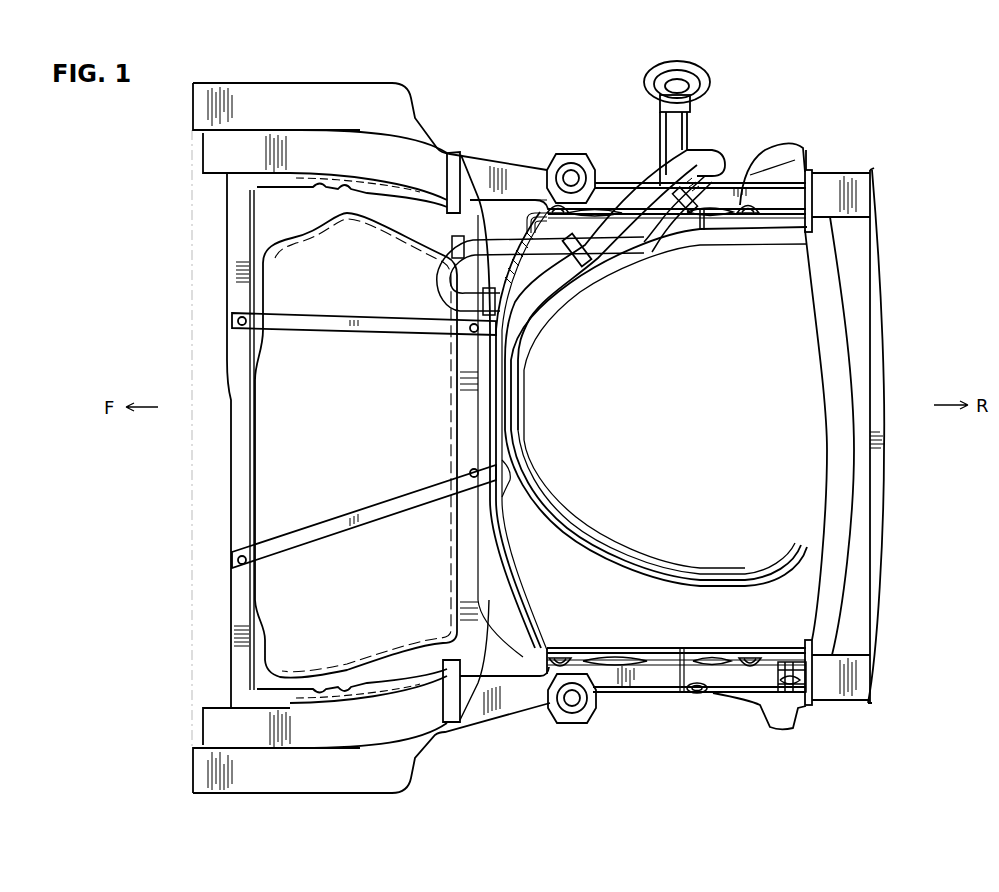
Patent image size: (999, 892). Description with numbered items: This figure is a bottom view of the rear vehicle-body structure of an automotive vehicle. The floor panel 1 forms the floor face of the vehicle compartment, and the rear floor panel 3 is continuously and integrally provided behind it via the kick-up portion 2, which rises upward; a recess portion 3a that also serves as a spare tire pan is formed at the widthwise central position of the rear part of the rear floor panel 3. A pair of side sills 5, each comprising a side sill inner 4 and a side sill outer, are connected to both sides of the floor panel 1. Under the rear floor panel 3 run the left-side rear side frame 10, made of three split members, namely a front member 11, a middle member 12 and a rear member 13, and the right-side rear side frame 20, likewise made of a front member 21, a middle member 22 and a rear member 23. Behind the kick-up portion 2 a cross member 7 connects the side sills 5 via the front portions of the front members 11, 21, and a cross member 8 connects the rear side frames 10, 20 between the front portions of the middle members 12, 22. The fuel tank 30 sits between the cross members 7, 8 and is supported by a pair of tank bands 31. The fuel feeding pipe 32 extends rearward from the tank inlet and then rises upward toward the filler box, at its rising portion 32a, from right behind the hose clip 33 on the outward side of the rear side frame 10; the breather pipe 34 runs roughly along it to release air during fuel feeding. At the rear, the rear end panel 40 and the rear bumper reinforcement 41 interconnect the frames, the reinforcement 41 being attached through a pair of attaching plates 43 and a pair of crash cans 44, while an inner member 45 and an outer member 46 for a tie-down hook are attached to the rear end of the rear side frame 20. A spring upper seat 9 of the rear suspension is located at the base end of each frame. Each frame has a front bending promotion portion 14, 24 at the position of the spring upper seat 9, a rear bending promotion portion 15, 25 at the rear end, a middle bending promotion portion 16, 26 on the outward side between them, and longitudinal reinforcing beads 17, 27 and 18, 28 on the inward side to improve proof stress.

The floor panel 1 is at (200, 216).
The kick-up portion 2 is at (228, 278).
The rear floor panel 3 is at (804, 346).
The recess portion 3a is at (656, 406).
The side sill inner 4 is at (256, 105).
The side sill 5 is at (306, 84).
The cross member 7 is at (234, 392).
The cross member 8 is at (483, 426).
The spring upper seat 9 is at (568, 152).
The left-side rear side frame 10 is at (613, 168).
The front member 11 is at (362, 146).
The middle member 12 is at (462, 150).
The rear member 13 is at (747, 164).
The front bending promotion portion 14 is at (557, 216).
The rear bending promotion portion 15 is at (748, 220).
The middle bending promotion portion 16 is at (702, 232).
The reinforcing bead 17 is at (630, 228).
The reinforcing bead 18 is at (713, 218).
The right-side rear side frame 20 is at (629, 704).
The front member 21 is at (365, 727).
The middle member 22 is at (524, 694).
The rear member 23 is at (719, 675).
The front bending promotion portion 24 is at (561, 655).
The rear bending promotion portion 25 is at (751, 660).
The middle bending promotion portion 26 is at (694, 697).
The reinforcing bead 27 is at (595, 656).
The reinforcing bead 28 is at (707, 657).
The fuel tank 30 is at (356, 445).
The tank band 31 is at (327, 318).
The fuel feeding pipe 32 is at (608, 272).
The rising portion 32a is at (708, 150).
The hose clip 33 is at (681, 212).
The breather pipe 34 is at (481, 185).
The rear end panel 40 is at (809, 321).
The rear bumper reinforcement 41 is at (886, 243).
The attaching plate 43 is at (812, 193).
The crash can 44 is at (840, 173).
The inner member 45 is at (792, 662).
The outer member 46 is at (792, 690).